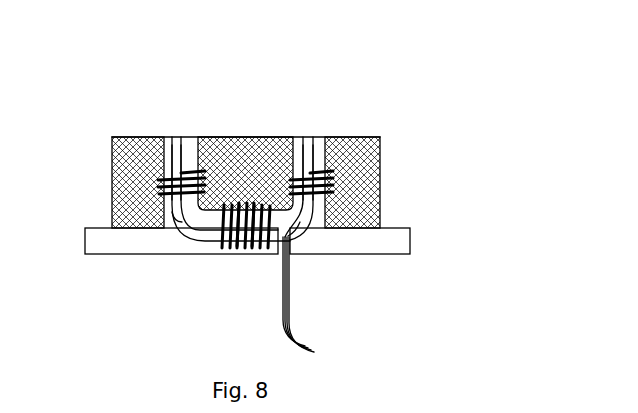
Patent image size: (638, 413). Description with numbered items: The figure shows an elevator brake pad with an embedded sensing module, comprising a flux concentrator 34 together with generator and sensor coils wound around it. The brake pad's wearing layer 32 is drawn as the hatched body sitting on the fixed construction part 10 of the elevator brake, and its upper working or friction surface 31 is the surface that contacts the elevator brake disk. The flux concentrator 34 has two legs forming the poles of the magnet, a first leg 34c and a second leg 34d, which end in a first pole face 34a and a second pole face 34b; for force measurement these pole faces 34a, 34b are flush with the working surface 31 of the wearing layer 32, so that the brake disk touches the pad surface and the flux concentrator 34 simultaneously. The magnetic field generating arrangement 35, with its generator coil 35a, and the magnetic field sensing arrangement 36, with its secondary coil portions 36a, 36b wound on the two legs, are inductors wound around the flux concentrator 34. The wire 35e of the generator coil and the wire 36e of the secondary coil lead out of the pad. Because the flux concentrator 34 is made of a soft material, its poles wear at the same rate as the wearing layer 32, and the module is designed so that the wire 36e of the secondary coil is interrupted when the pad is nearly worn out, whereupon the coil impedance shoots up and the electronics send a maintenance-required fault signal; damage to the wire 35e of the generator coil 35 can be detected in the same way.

The fixed construction part 10 is at (107, 250).
The working surface 31 is at (359, 133).
The wearing layer 32 is at (380, 175).
The flux concentrator 34 is at (313, 134).
The first pole face 34a is at (187, 137).
The second pole face 34b is at (318, 134).
The first leg 34c is at (178, 228).
The second leg 34d is at (293, 235).
The magnetic field generating arrangement 35 is at (250, 252).
The generator coil 35a is at (234, 252).
The wire of the generator coil 35e is at (282, 298).
The magnetic field sensing arrangement 36 is at (175, 137).
The secondary coil 36a is at (184, 107).
The secondary coil 36b is at (313, 105).
The wire of the secondary coil 36e is at (262, 298).